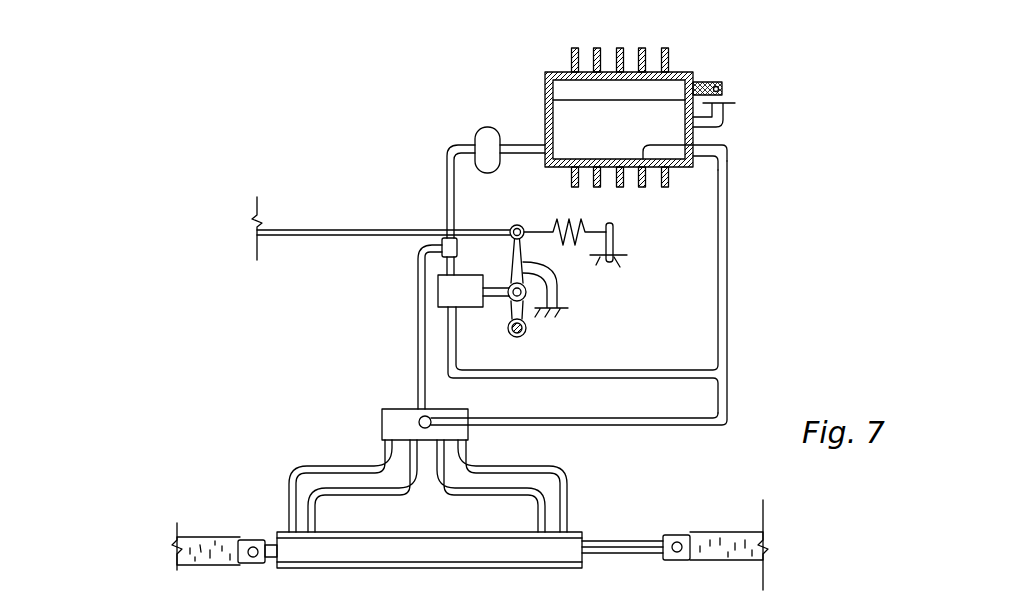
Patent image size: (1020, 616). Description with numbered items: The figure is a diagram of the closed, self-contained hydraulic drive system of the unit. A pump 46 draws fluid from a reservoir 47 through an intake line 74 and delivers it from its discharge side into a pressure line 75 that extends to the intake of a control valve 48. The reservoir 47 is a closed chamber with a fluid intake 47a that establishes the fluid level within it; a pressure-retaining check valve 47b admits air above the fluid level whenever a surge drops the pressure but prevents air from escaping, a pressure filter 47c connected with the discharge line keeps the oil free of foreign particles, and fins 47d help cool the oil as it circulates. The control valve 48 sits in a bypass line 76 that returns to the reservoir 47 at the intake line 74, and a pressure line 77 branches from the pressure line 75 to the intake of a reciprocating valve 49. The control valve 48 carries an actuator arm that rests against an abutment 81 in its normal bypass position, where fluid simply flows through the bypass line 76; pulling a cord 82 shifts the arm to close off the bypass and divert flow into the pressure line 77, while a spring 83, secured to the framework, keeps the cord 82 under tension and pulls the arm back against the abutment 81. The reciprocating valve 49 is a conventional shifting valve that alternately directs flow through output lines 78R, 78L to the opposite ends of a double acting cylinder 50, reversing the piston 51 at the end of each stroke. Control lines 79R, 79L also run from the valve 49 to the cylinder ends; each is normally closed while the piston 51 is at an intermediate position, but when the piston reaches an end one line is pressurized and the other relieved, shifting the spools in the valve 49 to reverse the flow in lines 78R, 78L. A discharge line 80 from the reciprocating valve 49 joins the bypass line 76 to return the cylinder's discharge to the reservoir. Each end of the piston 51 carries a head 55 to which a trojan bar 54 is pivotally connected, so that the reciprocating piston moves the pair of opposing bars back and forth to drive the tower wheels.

The pump 46 is at (486, 133).
The reservoir 47 is at (548, 72).
The fluid intake 47a is at (724, 116).
The pressure-retaining check valve 47b is at (724, 84).
The pressure filter 47c is at (697, 141).
The fins 47d is at (619, 50).
The control valve 48 is at (465, 275).
The reciprocating valve 49 is at (393, 412).
The cylinder 50 is at (410, 555).
The piston 51 is at (270, 560).
The trojan bar 54 is at (215, 543).
The head 55 is at (250, 540).
The intake line 74 is at (525, 146).
The pressure line 75 is at (447, 199).
The bypass line 76 is at (457, 356).
The pressure line 77 is at (418, 356).
The output line 78L is at (353, 500).
The output line 78R is at (517, 500).
The control line 79L is at (300, 468).
The control line 79R is at (556, 472).
The discharge line 80 is at (631, 418).
The abutment 81 is at (557, 292).
The cord 82 is at (322, 230).
The spring 83 is at (580, 220).